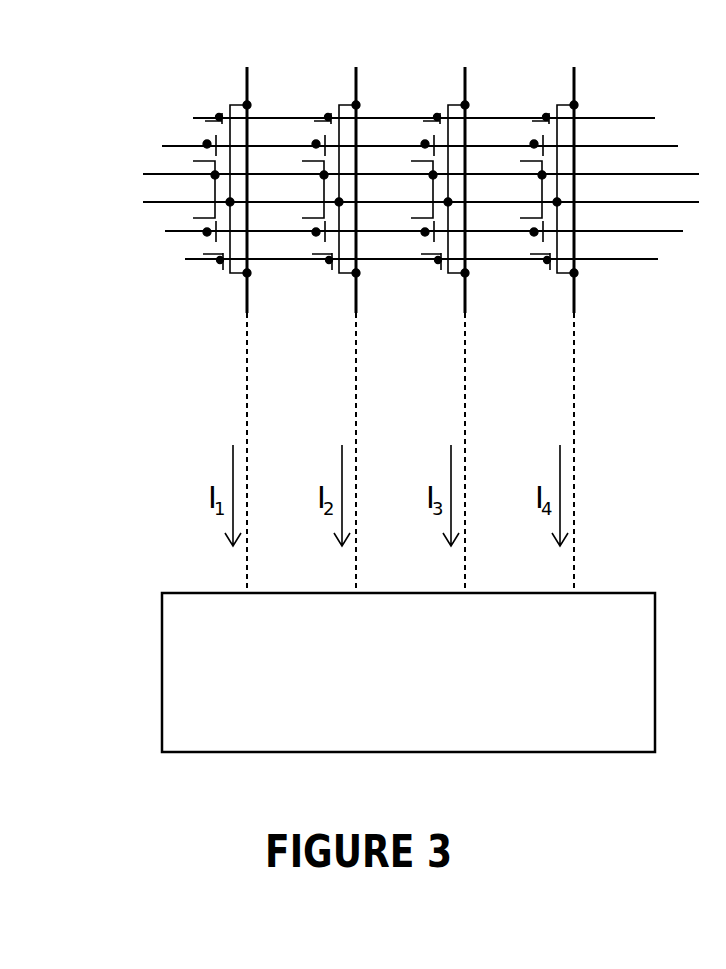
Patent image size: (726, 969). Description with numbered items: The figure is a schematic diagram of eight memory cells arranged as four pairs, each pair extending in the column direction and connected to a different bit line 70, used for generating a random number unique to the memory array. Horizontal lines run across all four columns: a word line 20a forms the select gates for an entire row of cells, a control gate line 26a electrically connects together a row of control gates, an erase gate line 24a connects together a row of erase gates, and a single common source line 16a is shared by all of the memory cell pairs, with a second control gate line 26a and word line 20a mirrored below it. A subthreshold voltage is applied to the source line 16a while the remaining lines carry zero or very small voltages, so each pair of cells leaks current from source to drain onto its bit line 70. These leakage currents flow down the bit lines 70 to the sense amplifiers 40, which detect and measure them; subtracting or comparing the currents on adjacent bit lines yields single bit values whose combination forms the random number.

The bit line 70 is at (409, 309).
The word line 20a is at (368, 184).
The control gate line 26a is at (370, 181).
The erase gate line 24a is at (369, 183).
The source line 16a is at (369, 194).
The sense amplifiers 40 is at (428, 707).